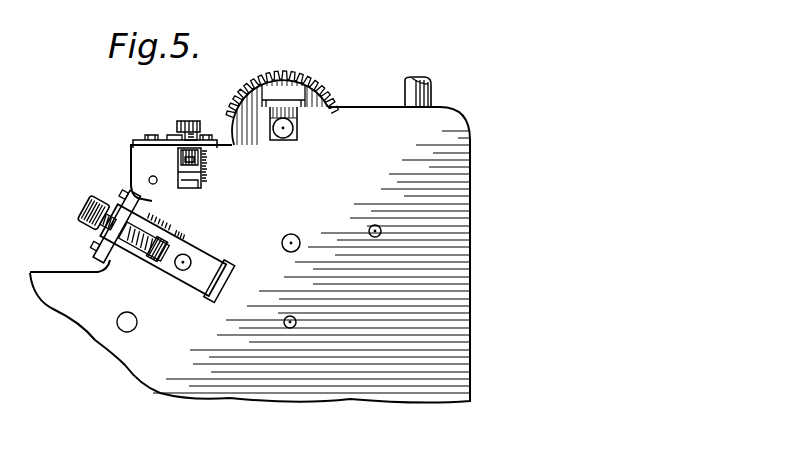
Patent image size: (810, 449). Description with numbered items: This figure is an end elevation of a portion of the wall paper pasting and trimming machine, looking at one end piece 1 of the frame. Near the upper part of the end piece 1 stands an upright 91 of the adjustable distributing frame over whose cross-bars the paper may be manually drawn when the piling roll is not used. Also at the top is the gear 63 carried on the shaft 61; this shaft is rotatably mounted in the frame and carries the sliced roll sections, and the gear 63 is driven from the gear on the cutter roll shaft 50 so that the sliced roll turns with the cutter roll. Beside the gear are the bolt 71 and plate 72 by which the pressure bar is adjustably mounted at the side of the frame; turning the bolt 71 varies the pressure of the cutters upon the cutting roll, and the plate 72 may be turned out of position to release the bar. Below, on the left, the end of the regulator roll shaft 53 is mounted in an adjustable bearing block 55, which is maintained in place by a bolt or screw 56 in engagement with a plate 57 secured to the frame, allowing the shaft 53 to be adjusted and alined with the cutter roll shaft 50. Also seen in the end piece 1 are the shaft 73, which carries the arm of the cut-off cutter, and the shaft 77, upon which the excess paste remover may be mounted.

The end piece 1 is at (467, 273).
The upright 91 is at (431, 92).
The gear 63 is at (293, 80).
The shaft 61 is at (297, 130).
The bolt 71 is at (185, 124).
The plate 72 is at (200, 138).
The adjustable bearing block 55 is at (187, 285).
The shaft 53 is at (189, 259).
The plate 57 is at (110, 247).
The bolt 56 is at (104, 205).
The shaft 50 is at (296, 236).
The shaft 73 is at (377, 226).
The shaft 77 is at (291, 316).